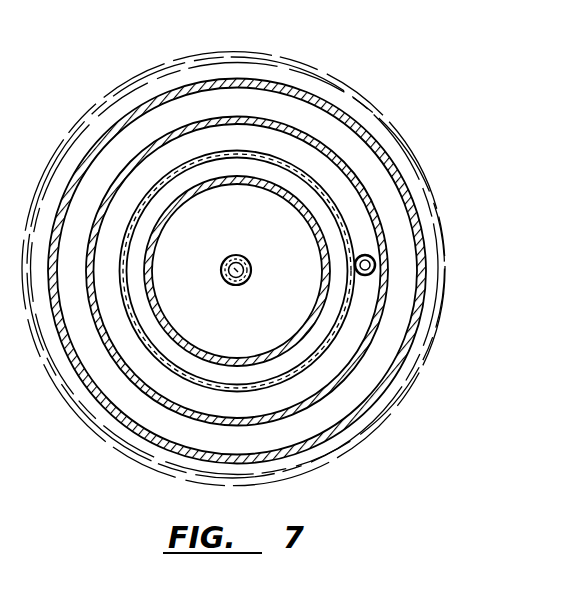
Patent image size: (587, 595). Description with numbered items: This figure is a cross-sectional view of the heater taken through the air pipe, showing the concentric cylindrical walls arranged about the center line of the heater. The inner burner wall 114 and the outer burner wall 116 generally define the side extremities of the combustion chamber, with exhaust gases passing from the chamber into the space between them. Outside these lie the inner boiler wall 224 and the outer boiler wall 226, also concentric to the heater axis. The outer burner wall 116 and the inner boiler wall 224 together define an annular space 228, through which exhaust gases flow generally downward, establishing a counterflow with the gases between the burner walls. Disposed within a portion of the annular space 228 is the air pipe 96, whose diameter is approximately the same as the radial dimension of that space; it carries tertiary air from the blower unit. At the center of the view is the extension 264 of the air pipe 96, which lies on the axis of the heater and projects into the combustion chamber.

The air pipe 96 is at (354, 264).
The inner burner wall 114 is at (165, 214).
The outer burner wall 116 is at (152, 250).
The inner boiler wall 224 is at (110, 313).
The outer boiler wall 226 is at (190, 449).
The annular space 228 is at (240, 137).
The extension of the pipe 264 is at (242, 256).